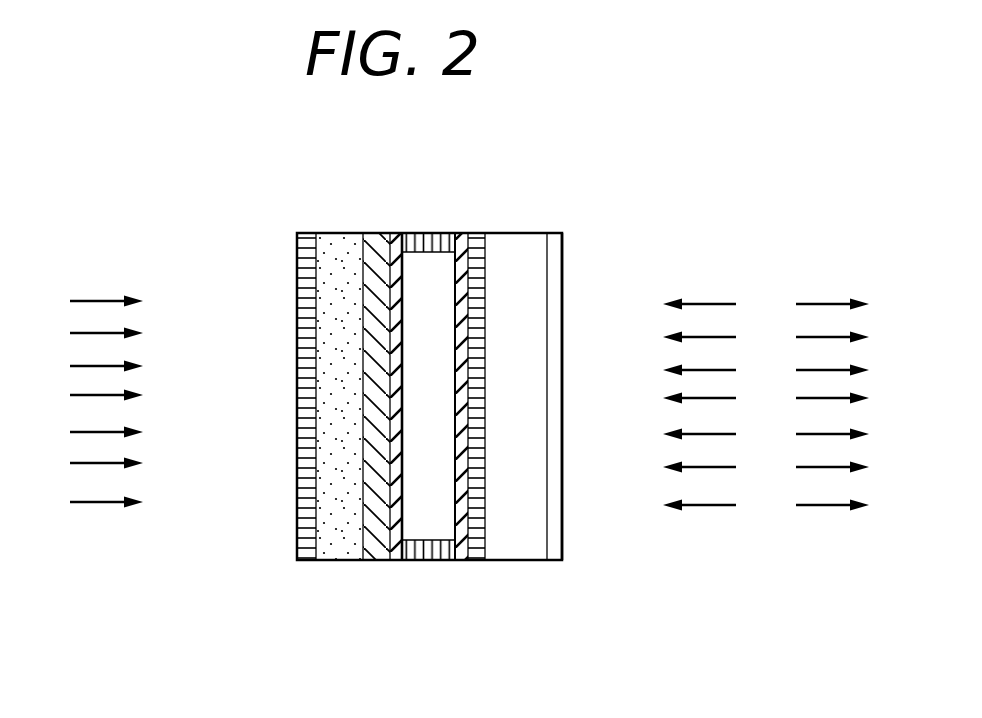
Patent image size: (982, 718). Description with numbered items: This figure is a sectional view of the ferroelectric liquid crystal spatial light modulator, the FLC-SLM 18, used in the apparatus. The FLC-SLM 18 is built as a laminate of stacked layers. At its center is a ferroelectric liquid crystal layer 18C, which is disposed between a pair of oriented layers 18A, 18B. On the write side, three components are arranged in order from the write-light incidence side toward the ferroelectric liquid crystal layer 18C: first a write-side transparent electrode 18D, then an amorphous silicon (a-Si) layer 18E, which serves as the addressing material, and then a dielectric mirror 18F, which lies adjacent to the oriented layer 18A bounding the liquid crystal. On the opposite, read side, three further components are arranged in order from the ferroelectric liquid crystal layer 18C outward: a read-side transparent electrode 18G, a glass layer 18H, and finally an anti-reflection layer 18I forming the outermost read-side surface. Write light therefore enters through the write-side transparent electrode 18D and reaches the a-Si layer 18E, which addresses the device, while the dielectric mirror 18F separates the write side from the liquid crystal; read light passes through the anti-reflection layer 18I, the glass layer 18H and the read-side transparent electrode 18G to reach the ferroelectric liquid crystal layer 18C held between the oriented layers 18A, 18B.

The FLC-SLM 18 is at (563, 162).
The oriented layer 18A is at (396, 560).
The oriented layer 18B is at (462, 548).
The ferroelectric liquid crystal layer 18C is at (440, 290).
The write-side transparent electrode 18D is at (305, 561).
The amorphous silicon layer 18E is at (343, 550).
The dielectric mirror 18F is at (379, 548).
The read-side transparent electrode 18G is at (481, 540).
The glass layer 18H is at (535, 327).
The anti-reflection layer 18I is at (563, 500).